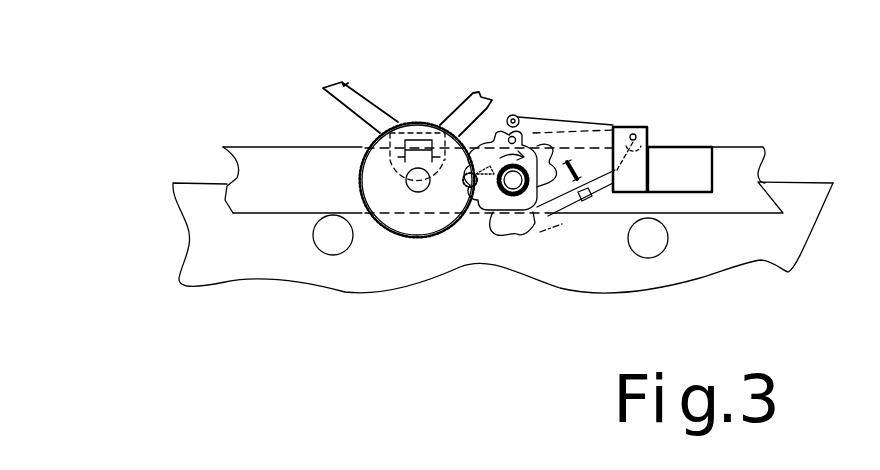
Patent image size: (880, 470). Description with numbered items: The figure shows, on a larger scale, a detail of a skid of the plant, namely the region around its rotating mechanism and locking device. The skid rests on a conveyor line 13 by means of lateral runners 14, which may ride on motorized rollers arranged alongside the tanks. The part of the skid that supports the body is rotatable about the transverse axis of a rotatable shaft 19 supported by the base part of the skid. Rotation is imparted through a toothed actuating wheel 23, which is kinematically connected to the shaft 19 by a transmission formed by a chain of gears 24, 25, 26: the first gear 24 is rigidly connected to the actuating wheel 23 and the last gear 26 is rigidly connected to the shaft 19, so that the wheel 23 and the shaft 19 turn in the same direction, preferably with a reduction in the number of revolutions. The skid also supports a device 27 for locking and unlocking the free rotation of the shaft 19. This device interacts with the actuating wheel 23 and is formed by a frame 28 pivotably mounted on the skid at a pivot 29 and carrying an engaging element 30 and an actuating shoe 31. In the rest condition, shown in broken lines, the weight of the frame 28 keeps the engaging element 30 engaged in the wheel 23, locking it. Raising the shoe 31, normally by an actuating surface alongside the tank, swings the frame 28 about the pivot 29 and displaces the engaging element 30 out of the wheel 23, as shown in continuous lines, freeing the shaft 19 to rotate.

The conveyor line 13 is at (320, 235).
The lateral runner 14 is at (746, 160).
The rotatable shaft 19 is at (418, 188).
The toothed actuating wheel 23 is at (496, 143).
The gear 24 is at (480, 200).
The gear 25 is at (458, 212).
The gear 26 is at (363, 177).
The locking/unlocking device 27 is at (610, 103).
The frame 28 is at (553, 122).
The pivot 29 is at (633, 134).
The engaging element 30 is at (508, 115).
The actuating shoe 31 is at (519, 212).